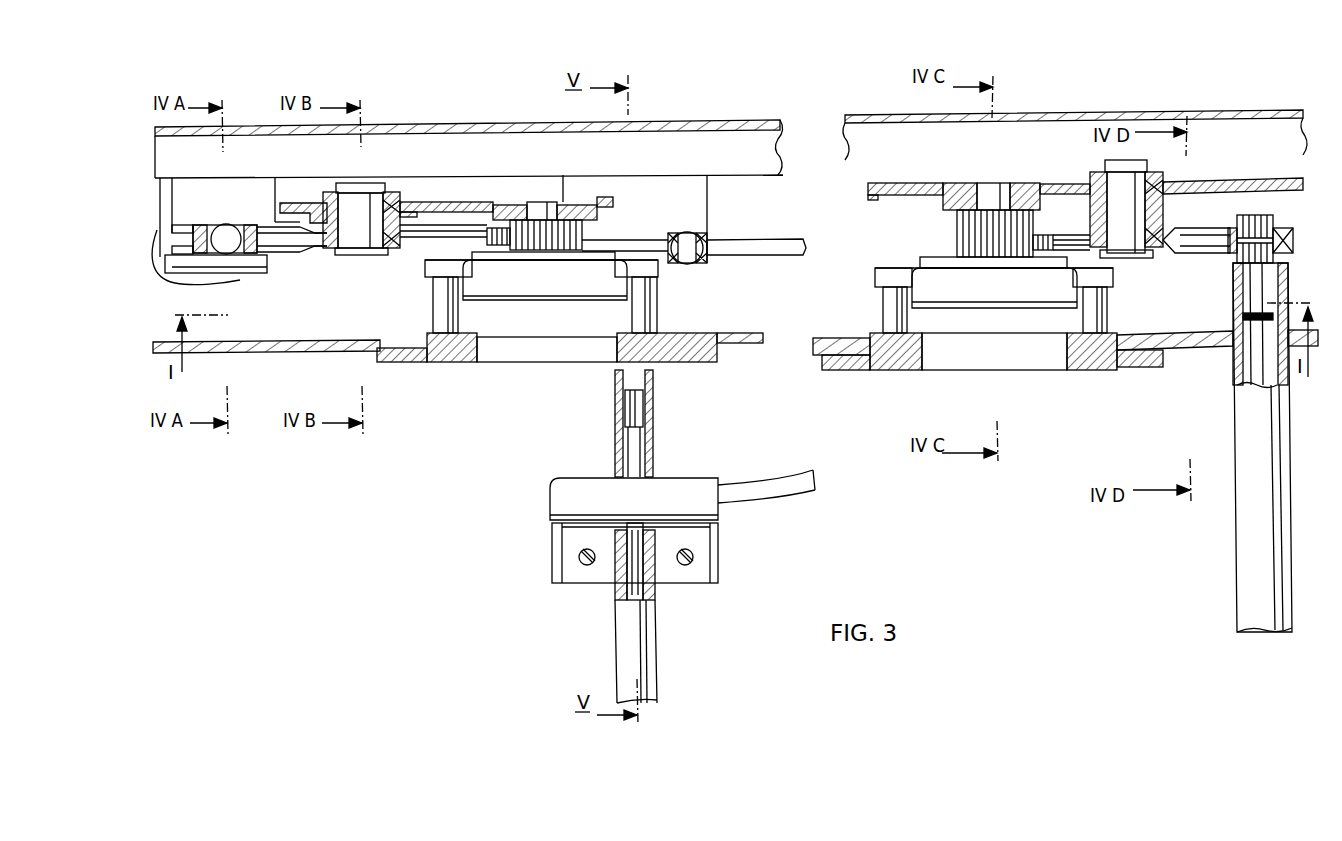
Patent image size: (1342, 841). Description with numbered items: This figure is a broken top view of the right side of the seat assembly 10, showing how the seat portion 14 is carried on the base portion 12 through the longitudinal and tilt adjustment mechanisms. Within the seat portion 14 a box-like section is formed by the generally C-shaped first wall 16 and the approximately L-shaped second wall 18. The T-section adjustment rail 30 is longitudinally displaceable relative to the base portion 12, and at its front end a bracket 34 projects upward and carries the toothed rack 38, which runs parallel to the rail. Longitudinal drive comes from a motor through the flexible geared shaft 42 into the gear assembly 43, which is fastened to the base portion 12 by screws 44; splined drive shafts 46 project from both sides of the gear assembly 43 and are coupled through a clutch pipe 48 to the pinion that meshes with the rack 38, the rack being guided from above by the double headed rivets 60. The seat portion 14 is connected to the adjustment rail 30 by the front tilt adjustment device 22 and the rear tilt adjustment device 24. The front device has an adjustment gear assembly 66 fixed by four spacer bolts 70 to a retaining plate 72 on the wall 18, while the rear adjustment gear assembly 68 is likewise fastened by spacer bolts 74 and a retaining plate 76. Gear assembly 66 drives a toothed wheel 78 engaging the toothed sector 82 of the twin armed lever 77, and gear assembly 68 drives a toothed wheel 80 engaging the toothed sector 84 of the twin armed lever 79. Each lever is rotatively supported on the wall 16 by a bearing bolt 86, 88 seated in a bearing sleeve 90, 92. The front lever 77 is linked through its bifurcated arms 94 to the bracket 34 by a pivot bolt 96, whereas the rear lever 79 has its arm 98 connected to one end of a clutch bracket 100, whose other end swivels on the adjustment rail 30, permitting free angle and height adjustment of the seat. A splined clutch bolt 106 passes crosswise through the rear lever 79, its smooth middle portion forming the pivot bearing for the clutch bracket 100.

The seat assembly 10 is at (871, 513).
The base portion 12 is at (718, 129).
The seat portion 14 is at (245, 277).
The first wall 16 is at (606, 204).
The second wall 18 is at (728, 337).
The front tilt adjustment device 22 is at (462, 121).
The rear tilt adjustment device 24 is at (1073, 106).
The adjustment rail 30 is at (286, 190).
The bracket 34 is at (178, 224).
The toothed rack 38 is at (750, 240).
The flexible geared shaft 42 is at (757, 503).
The gear assembly 43 is at (557, 493).
The screws 44 is at (585, 570).
The splined drive shafts 46 is at (650, 423).
The clutch pipe 48 is at (657, 407).
The rivets 60 is at (685, 233).
The adjustment gear assembly 66 is at (500, 288).
The adjustment gear assembly 68 is at (1002, 297).
The spacer bolts 70 is at (433, 297).
The retaining plate 72 is at (407, 362).
The spacer bolts 74 is at (907, 320).
The retaining plate 76 is at (1087, 370).
The twin armed lever 77 is at (460, 228).
The toothed wheel 78 is at (586, 228).
The twin armed lever 79 is at (1190, 233).
The toothed wheel 80 is at (1035, 230).
The toothed sector 82 is at (495, 215).
The toothed sector 84 is at (1038, 258).
The bearing bolt 86 is at (362, 208).
The bearing bolt 88 is at (1122, 193).
The bearing sleeve 90 is at (398, 203).
The bearing sleeve 92 is at (1155, 196).
The arms 94 is at (286, 230).
The pivot bolt 96 is at (228, 232).
The arm 98 is at (1293, 240).
The clutch bracket 100 is at (1228, 253).
The splined clutch bolt 106 is at (1262, 222).